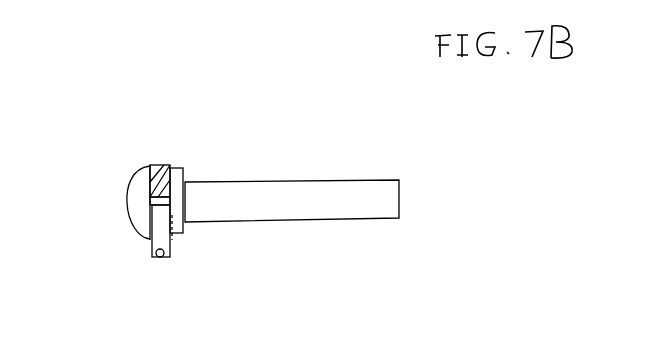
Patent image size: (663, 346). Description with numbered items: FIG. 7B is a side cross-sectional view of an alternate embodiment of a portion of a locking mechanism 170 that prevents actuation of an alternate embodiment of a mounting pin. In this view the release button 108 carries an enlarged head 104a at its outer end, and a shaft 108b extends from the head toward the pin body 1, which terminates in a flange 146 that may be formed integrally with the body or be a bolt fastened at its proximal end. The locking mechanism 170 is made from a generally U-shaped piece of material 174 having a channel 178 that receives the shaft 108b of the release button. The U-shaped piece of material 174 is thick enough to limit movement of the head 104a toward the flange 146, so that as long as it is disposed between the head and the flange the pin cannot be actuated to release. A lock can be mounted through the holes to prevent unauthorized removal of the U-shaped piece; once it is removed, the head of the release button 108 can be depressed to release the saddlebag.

The shaft 1 is at (262, 181).
The dome head 104a is at (132, 198).
The release button 108 is at (129, 213).
The shaft of the release button 108b is at (172, 204).
The flange 146 is at (238, 121).
The locking mechanism 170 is at (162, 163).
The generally U-shaped piece of material 174 is at (155, 243).
The channel 178 is at (161, 258).